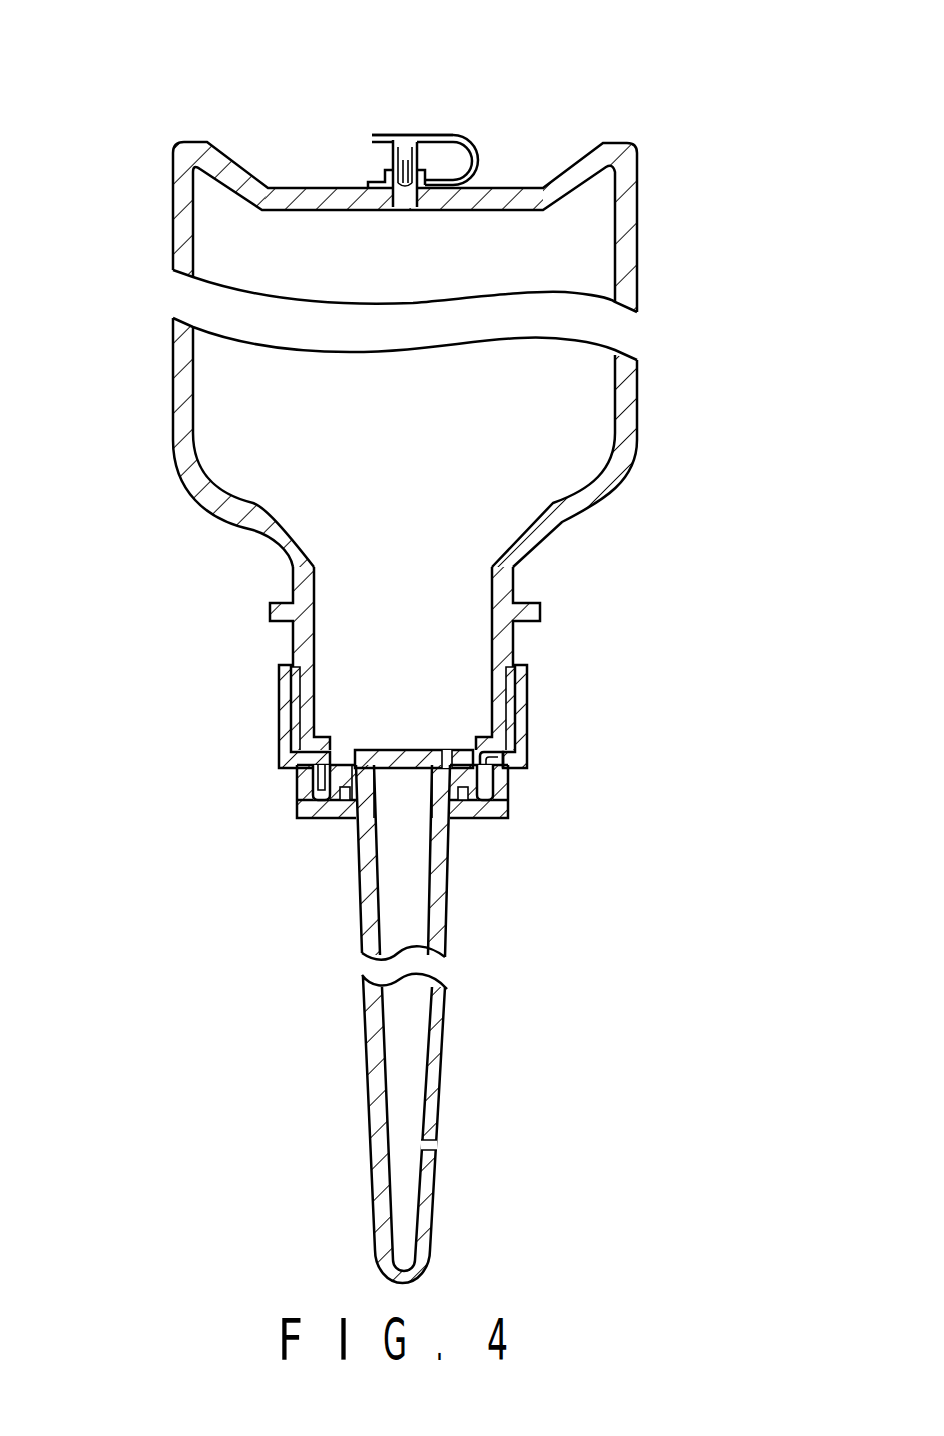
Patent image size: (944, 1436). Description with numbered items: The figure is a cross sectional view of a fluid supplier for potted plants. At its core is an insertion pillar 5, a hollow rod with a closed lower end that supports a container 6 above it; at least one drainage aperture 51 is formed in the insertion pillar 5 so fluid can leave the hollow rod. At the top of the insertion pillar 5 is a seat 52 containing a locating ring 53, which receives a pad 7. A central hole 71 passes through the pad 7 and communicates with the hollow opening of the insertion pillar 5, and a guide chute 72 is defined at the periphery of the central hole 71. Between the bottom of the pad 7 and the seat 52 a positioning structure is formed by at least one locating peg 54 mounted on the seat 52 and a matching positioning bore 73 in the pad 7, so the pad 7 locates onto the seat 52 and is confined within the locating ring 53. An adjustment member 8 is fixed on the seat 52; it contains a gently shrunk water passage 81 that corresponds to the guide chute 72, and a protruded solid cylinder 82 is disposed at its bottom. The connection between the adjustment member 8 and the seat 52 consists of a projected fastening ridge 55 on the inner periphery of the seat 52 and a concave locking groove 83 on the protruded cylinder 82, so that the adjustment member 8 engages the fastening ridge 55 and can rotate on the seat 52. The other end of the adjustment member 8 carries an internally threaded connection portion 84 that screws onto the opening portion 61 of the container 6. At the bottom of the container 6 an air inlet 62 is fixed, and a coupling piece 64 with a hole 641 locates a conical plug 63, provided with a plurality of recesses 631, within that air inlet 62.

The insertion pillar 5 is at (404, 1024).
The drainage aperture 51 is at (437, 1147).
The seat 52 is at (307, 795).
The locating ring 53 is at (337, 800).
The locating peg 54 is at (357, 800).
The fastening ridge 55 is at (313, 775).
The container 6 is at (351, 375).
The opening portion 61 is at (308, 650).
The air inlet 62 is at (405, 208).
The conical plug 63 is at (363, 147).
The recess 631 is at (405, 118).
The coupling piece 64 is at (444, 93).
The hole 641 is at (437, 135).
The pad 7 is at (390, 837).
The central hole 71 is at (397, 783).
The guide chute 72 is at (433, 785).
The positioning bore 73 is at (463, 797).
The adjustment member 8 is at (389, 710).
The water passage 81 is at (443, 753).
The protruded solid cylinder 82 is at (455, 790).
The locking groove 83 is at (483, 760).
The threaded connection portion 84 is at (277, 698).